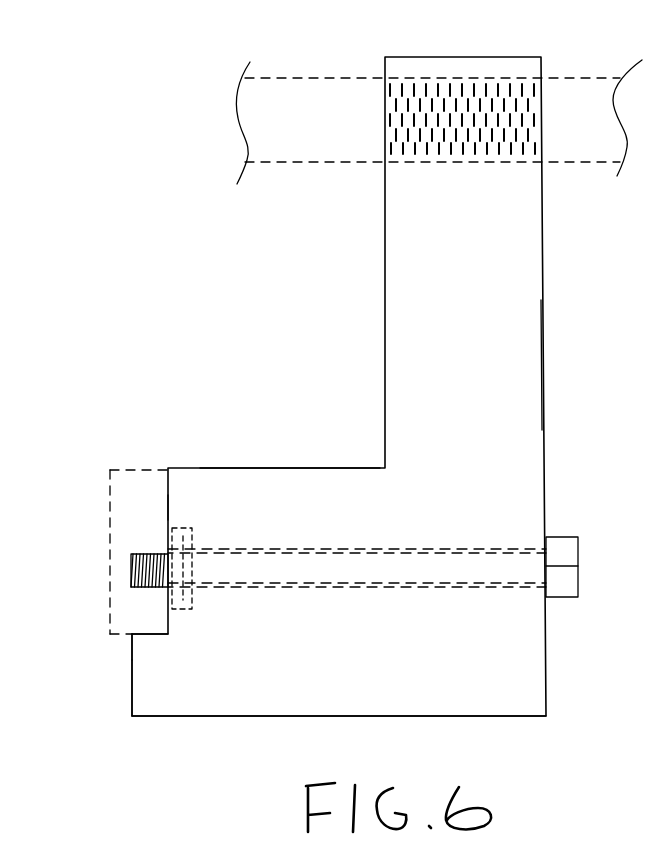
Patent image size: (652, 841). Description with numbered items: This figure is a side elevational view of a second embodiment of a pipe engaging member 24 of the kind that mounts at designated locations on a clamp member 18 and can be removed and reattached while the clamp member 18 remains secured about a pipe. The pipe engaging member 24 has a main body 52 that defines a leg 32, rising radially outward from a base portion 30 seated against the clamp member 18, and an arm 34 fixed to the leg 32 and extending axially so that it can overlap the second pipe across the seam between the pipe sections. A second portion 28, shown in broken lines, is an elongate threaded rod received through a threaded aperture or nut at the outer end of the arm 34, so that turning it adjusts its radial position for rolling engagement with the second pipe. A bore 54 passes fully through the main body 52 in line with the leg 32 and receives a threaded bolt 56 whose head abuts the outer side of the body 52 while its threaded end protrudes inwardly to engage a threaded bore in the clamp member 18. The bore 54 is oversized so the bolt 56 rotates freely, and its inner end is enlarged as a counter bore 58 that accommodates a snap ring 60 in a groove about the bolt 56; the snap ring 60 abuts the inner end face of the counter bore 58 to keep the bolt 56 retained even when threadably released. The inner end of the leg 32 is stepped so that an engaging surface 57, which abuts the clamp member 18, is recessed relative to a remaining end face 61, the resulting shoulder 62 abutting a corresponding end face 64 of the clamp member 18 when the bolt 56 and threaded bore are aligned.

The clamp member 18 is at (134, 462).
The pipe engaging member 24 is at (298, 345).
The second portion 28 is at (309, 77).
The base portion 30 is at (144, 746).
The leg 32 is at (311, 492).
The arm 34 is at (523, 371).
The main body 52 is at (474, 475).
The bore 54 is at (340, 590).
The threaded bolt 56 is at (397, 555).
The engaging surface 57 is at (168, 505).
The counter bore 58 is at (185, 613).
The snap ring 60 is at (180, 593).
The remaining end face 61 is at (132, 690).
The shoulder 62 is at (147, 638).
The end face 64 is at (132, 637).